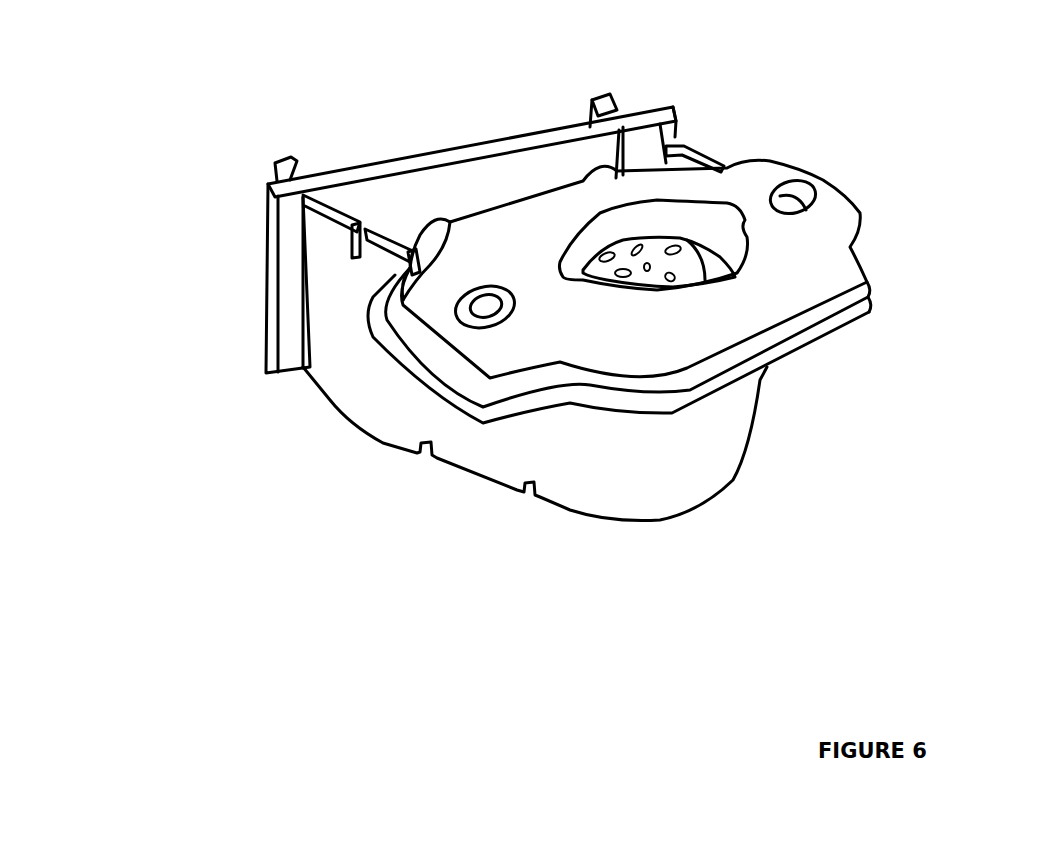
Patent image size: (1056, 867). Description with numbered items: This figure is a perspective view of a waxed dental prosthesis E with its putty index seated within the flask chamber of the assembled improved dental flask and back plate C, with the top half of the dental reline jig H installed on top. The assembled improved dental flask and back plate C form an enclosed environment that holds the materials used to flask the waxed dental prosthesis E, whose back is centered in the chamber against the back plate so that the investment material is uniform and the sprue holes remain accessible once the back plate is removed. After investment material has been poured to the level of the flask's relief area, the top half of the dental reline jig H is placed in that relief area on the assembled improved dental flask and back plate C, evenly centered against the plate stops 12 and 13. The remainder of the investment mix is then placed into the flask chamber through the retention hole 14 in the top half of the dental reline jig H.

The plate stop 12 is at (403, 272).
The plate stop 13 is at (728, 163).
The retention hole 14 is at (740, 280).
The top half of the dental reline jig H is at (830, 175).
The waxed dental prosthesis E is at (867, 322).
The assembled improved dental flask and back plate C is at (337, 453).